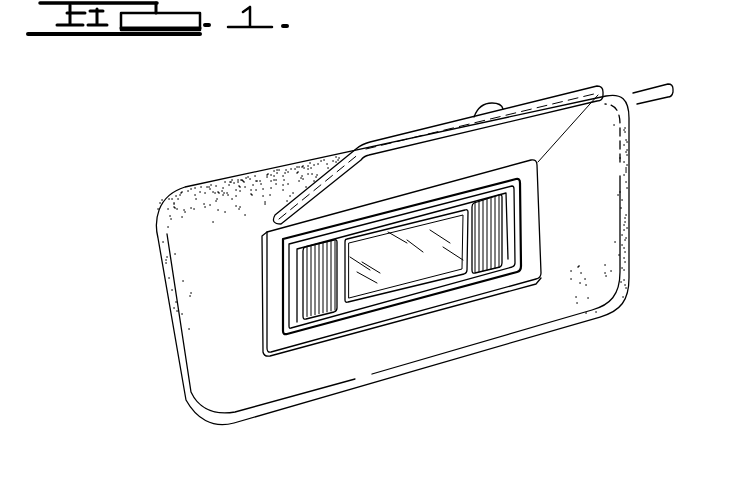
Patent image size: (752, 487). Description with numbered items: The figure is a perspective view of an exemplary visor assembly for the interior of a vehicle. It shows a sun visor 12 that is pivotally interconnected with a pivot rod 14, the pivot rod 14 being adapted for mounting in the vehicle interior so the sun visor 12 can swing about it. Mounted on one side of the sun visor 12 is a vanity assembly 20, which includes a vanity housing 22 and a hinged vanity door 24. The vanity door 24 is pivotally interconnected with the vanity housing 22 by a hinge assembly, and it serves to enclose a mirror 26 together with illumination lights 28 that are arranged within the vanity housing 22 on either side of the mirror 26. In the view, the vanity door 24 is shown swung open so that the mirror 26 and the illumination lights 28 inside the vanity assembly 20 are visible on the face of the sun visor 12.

The sun visor 12 is at (220, 377).
The pivot rod 14 is at (643, 94).
The vanity assembly 20 is at (250, 328).
The vanity housing 22 is at (533, 212).
The vanity door 24 is at (533, 136).
The mirror 26 is at (415, 271).
The illumination lights 28 is at (320, 304).